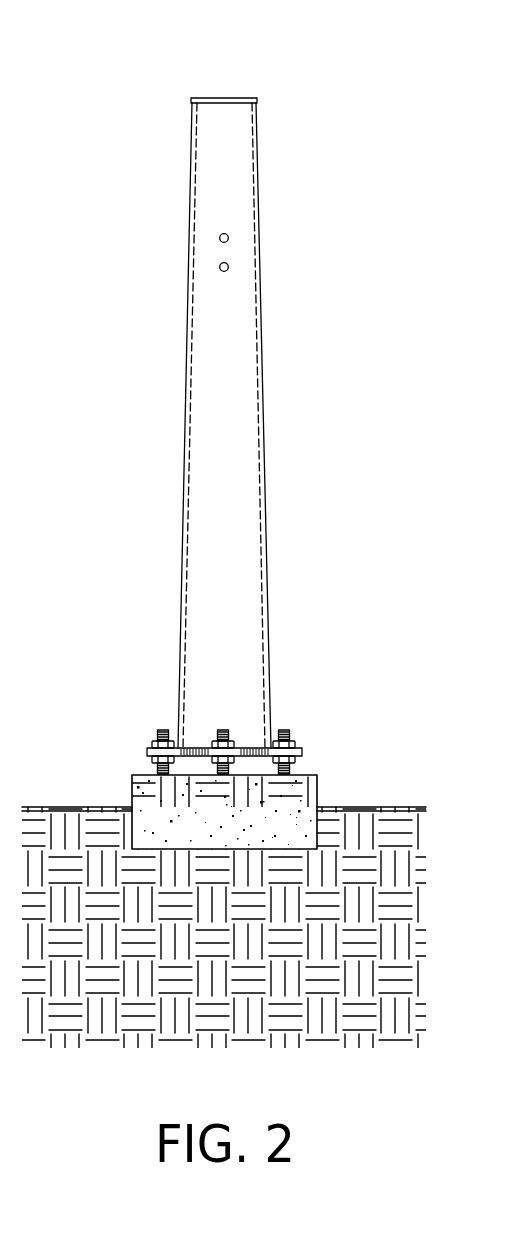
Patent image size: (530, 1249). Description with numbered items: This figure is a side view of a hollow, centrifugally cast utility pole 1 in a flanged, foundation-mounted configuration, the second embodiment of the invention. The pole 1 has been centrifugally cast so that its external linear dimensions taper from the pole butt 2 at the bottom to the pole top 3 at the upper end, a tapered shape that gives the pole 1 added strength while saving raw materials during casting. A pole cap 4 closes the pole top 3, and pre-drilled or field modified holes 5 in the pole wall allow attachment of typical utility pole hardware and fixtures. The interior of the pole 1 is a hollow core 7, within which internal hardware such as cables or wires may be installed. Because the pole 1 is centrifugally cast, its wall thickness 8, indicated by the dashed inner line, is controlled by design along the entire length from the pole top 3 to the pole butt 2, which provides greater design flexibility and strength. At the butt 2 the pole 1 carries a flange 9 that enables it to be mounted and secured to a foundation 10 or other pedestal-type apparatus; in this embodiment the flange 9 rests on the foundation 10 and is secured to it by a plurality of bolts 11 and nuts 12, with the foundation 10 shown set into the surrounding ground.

The utility pole 1 is at (275, 437).
The pole butt 2 is at (198, 731).
The pole top 3 is at (205, 128).
The pole cap 4 is at (226, 98).
The holes 5 is at (219, 238).
The hollow core 7 is at (215, 616).
The wall thickness 8 is at (190, 398).
The flange 9 is at (146, 752).
The foundation 10 is at (307, 794).
The bolts 11 is at (285, 728).
The nuts 12 is at (294, 746).